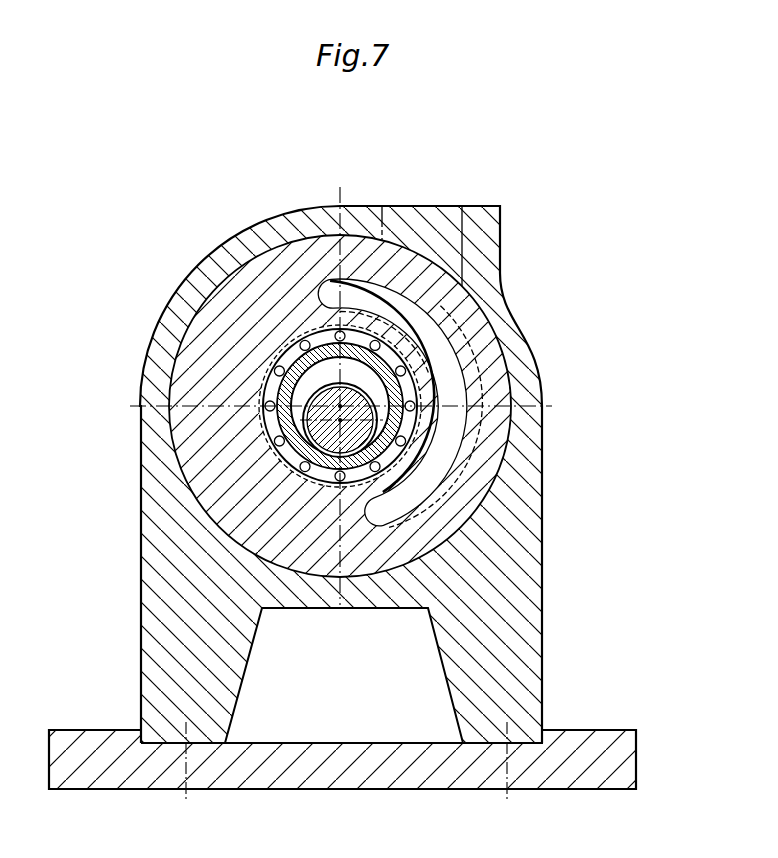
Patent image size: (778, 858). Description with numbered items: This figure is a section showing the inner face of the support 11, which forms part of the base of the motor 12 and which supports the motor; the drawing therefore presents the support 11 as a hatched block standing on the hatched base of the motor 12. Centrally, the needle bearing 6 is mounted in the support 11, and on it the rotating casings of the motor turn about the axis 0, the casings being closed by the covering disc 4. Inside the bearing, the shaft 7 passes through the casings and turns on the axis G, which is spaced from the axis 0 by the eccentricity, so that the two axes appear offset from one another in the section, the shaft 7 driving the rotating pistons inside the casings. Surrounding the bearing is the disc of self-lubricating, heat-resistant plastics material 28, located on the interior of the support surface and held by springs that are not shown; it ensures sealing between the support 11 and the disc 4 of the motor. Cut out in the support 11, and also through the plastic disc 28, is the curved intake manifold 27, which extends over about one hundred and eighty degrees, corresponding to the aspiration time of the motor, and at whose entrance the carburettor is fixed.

The intake manifold 27 is at (425, 232).
The needle bearing 6 is at (315, 330).
The disc of self-lubricating plastics material 28 is at (230, 325).
The disc 4 is at (389, 362).
The axis O 0 is at (342, 405).
The axis G is at (342, 421).
The shaft 7 is at (325, 430).
The support 11 is at (478, 582).
The base of the motor 12 is at (98, 739).